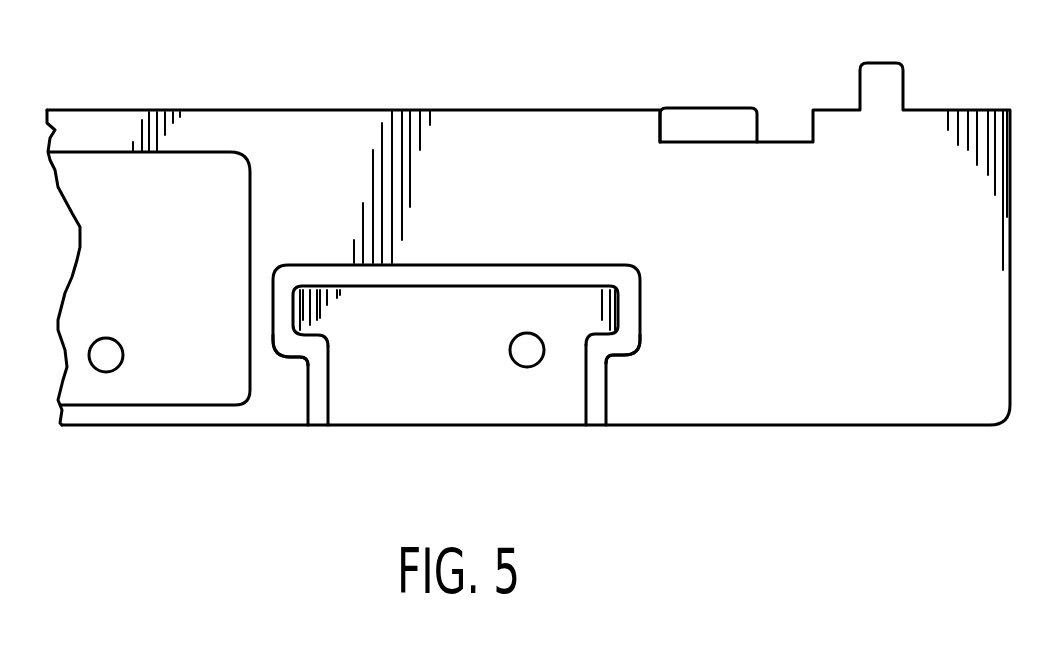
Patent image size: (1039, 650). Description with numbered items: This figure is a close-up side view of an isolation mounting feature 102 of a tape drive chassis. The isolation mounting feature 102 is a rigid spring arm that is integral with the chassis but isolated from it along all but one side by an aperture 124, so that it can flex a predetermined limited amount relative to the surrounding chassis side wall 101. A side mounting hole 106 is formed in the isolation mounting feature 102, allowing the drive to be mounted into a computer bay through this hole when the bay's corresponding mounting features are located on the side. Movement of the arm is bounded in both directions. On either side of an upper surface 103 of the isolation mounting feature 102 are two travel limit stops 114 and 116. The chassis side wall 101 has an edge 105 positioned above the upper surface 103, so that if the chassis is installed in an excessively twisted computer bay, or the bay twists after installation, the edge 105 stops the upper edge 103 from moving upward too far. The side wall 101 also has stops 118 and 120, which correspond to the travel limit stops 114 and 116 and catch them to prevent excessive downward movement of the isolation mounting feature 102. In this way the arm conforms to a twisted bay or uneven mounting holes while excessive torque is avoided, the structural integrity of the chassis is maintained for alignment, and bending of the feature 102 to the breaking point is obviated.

The chassis side wall 101 is at (980, 130).
The isolation mounting feature 102 is at (405, 412).
The upper surface 103 is at (445, 287).
The edge 105 is at (462, 263).
The side mounting hole 106 is at (528, 370).
The travel limit stop 114 is at (307, 310).
The travel limit stop 116 is at (613, 310).
The stop 118 is at (300, 363).
The stop 120 is at (613, 365).
The aperture 124 is at (593, 413).